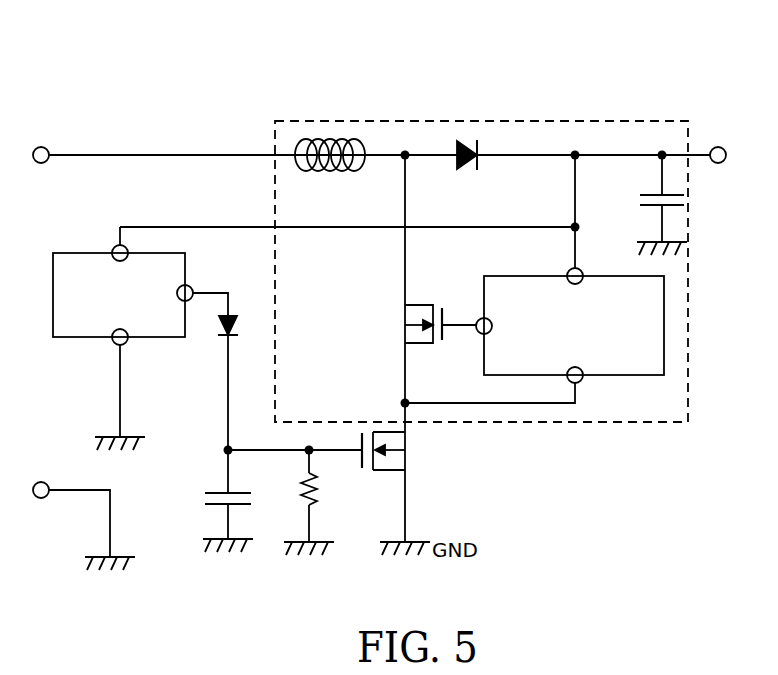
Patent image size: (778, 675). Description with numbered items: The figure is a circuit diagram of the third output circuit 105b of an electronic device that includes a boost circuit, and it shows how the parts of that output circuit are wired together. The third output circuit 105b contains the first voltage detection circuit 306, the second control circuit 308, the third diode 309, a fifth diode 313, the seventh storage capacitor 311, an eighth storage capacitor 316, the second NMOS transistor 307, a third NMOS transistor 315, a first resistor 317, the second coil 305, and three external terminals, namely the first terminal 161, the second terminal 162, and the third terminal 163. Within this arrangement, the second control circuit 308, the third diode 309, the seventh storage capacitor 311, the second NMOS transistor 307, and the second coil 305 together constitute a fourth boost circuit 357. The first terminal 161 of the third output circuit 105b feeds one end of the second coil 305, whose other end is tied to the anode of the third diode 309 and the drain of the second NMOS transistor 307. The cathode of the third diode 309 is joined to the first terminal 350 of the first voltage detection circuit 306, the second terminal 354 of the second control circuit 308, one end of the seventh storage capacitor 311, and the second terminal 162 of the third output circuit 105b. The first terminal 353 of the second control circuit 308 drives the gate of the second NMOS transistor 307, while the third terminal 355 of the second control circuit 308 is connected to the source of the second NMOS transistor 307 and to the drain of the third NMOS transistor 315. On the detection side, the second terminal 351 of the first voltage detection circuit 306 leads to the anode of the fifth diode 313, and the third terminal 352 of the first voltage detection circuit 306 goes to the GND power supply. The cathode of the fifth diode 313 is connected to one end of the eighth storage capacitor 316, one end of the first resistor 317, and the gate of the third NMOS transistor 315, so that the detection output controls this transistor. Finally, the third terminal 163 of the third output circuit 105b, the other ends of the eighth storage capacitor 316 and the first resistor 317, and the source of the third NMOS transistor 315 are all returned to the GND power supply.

The third output circuit 105b is at (481, 225).
The first terminal 161 is at (45, 164).
The second terminal 162 is at (723, 163).
The third terminal 163 is at (47, 497).
The second coil 305 is at (332, 176).
The first voltage detection circuit 306 is at (190, 258).
The second NMOS transistor 307 is at (420, 345).
The second control circuit 308 is at (666, 322).
The third diode 309 is at (467, 170).
The seventh storage capacitor 311 is at (672, 208).
The fifth diode 313 is at (216, 343).
The third NMOS transistor 315 is at (408, 453).
The eighth storage capacitor 316 is at (205, 507).
The first resistor 317 is at (318, 485).
The first terminal 350 is at (118, 244).
The second terminal 351 is at (194, 291).
The third terminal 352 is at (111, 345).
The first terminal 353 is at (483, 318).
The second terminal 354 is at (582, 270).
The third terminal 355 is at (582, 382).
The fourth boost circuit 357 is at (432, 114).